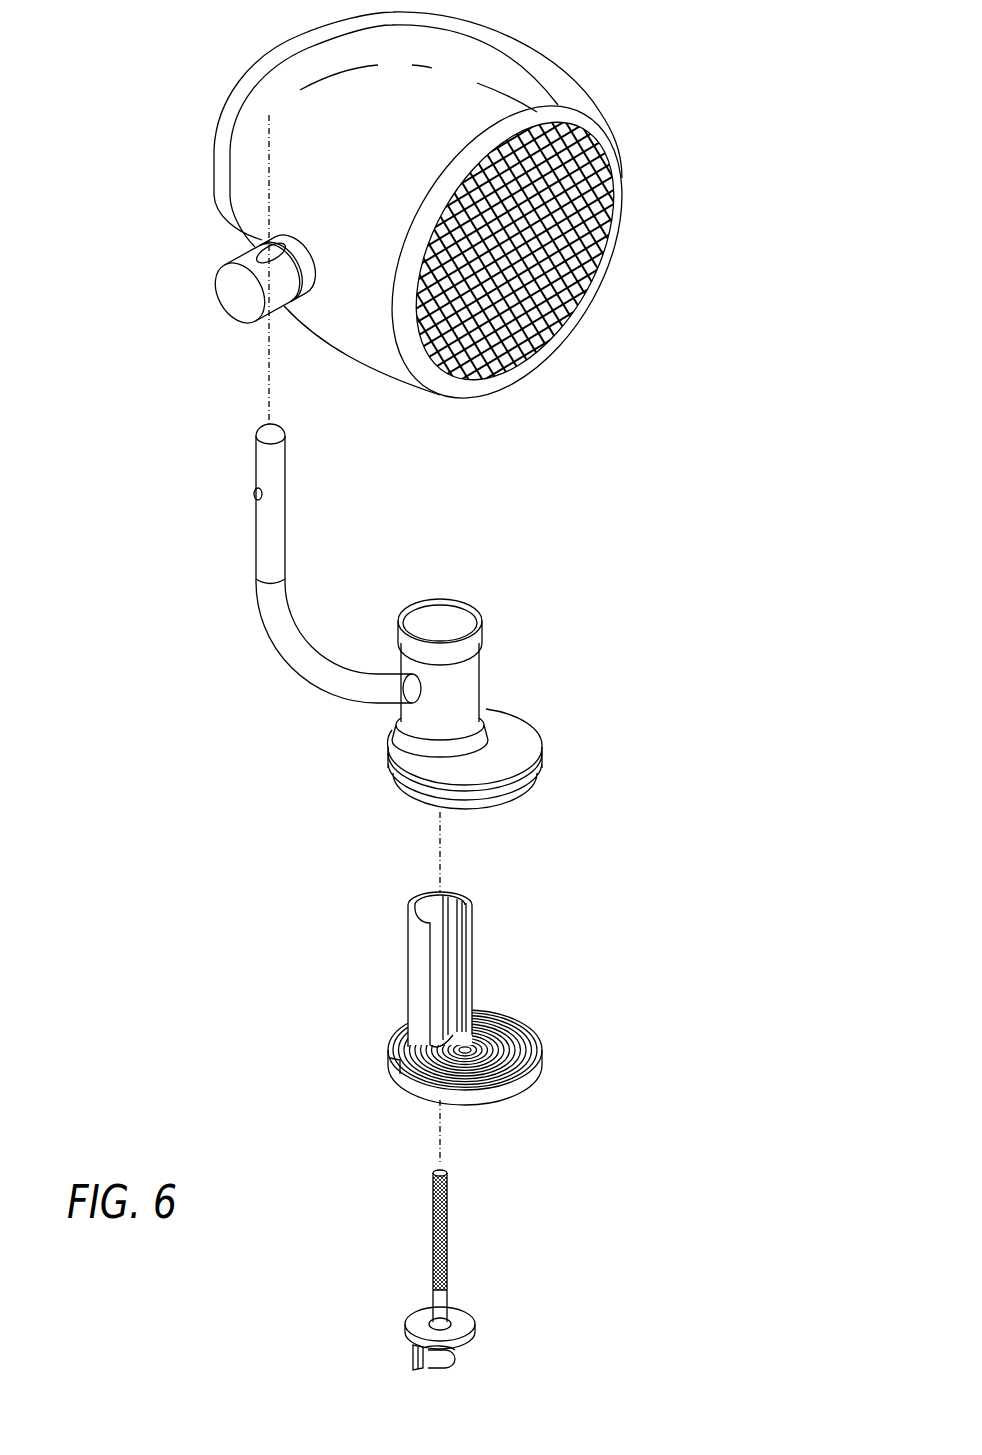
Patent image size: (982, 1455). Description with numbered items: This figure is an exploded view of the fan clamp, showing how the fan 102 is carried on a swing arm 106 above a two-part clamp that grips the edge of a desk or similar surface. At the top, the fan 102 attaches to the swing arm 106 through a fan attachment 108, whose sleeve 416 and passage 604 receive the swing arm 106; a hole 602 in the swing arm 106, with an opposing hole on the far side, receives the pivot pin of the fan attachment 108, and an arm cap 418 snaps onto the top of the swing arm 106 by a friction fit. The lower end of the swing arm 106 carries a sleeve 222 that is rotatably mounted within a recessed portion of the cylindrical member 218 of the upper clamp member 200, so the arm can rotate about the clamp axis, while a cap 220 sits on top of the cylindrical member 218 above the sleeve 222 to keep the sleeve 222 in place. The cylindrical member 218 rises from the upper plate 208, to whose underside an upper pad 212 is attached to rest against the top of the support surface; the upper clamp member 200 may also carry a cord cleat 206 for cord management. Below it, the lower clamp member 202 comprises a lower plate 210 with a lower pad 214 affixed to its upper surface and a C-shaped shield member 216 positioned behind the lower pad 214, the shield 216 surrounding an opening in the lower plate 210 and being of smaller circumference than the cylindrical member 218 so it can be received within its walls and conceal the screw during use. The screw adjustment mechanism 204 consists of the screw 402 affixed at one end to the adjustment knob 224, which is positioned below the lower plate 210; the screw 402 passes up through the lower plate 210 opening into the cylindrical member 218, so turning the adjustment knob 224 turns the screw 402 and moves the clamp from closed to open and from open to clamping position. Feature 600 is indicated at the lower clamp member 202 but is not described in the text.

The fan 102 is at (484, 57).
The swing arm 106 is at (262, 634).
The fan attachment 108 is at (246, 295).
The upper clamp member 200 is at (570, 646).
The lower clamp member 202 is at (518, 968).
The screw adjustment mechanism 204 is at (475, 1268).
The cord cleat 206 is at (396, 718).
The upper plate 208 is at (520, 758).
The lower plate 210 is at (396, 1042).
The upper pad 212 is at (520, 800).
The lower pad 214 is at (525, 1031).
The shield member 216 is at (415, 948).
The cylindrical member 218 is at (478, 732).
The cap 220 is at (441, 626).
The sleeve 222 is at (470, 672).
The adjustment knob 224 is at (414, 1360).
The screw 402 is at (434, 1236).
The sleeve 416 is at (292, 305).
The arm cap 418 is at (262, 433).
The notch 600 is at (393, 1060).
The hole 602 is at (256, 494).
The passage 604 is at (263, 250).